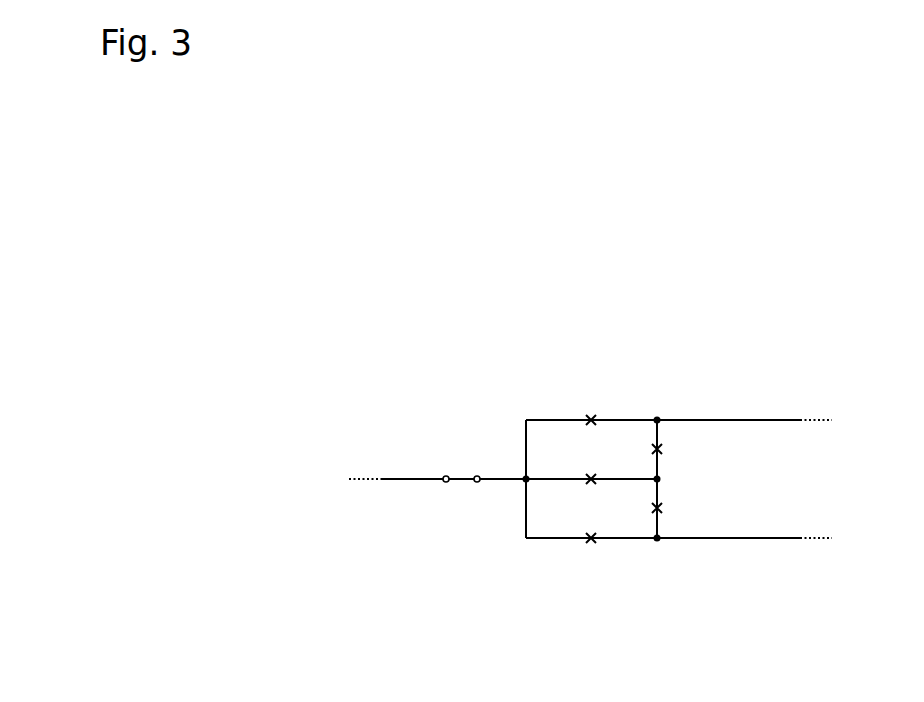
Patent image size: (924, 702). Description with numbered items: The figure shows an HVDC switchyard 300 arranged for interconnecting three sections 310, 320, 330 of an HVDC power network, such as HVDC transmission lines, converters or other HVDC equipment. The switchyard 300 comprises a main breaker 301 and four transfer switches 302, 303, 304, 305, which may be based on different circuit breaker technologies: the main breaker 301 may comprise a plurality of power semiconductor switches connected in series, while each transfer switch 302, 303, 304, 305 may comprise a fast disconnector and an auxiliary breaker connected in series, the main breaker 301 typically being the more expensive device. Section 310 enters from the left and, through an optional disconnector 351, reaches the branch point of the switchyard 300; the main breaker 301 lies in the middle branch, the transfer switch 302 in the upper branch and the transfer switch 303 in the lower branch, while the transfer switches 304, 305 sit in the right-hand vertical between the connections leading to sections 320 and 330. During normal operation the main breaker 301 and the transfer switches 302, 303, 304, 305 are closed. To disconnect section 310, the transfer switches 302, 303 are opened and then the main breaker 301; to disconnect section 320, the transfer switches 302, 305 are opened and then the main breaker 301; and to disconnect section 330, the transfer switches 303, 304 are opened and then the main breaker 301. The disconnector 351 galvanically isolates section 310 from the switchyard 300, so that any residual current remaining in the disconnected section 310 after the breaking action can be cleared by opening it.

The switchyard 300 is at (467, 688).
The main breaker 301 is at (577, 486).
The transfer switch 302 is at (589, 399).
The transfer switch 303 is at (590, 564).
The transfer switch 304 is at (688, 447).
The transfer switch 305 is at (688, 512).
The section 310 is at (332, 481).
The section 320 is at (849, 421).
The section 330 is at (849, 539).
The disconnector 351 is at (466, 462).